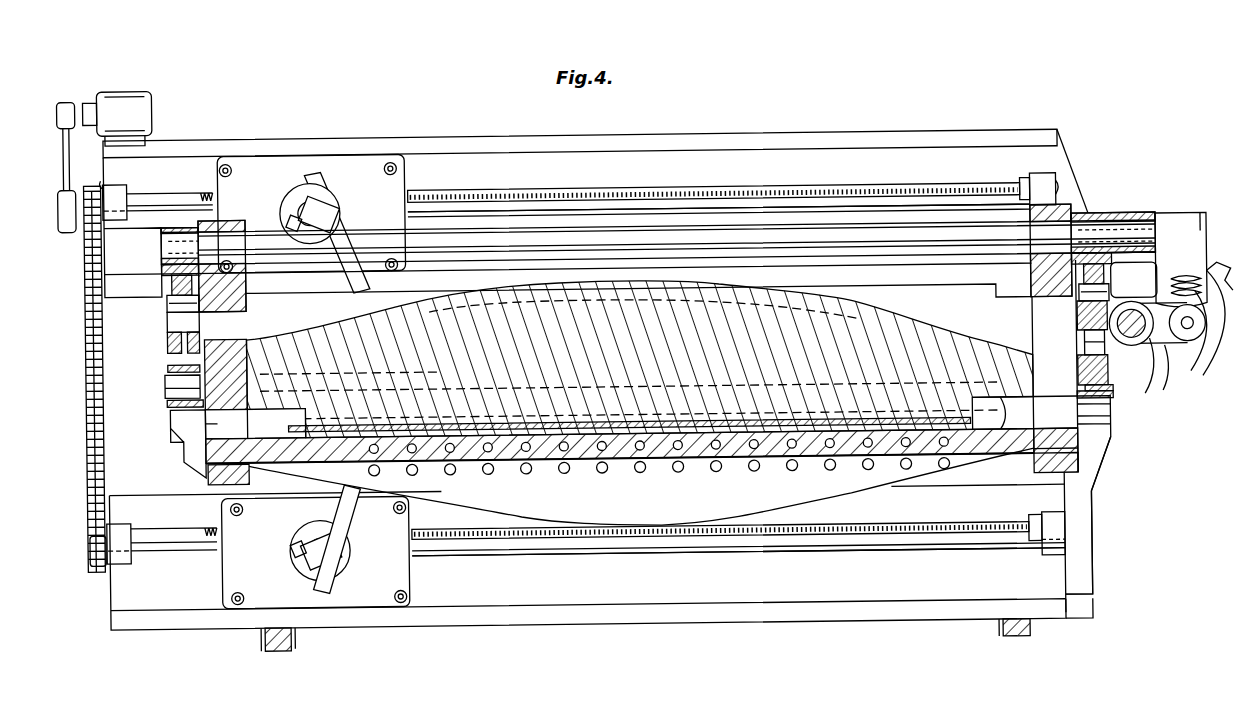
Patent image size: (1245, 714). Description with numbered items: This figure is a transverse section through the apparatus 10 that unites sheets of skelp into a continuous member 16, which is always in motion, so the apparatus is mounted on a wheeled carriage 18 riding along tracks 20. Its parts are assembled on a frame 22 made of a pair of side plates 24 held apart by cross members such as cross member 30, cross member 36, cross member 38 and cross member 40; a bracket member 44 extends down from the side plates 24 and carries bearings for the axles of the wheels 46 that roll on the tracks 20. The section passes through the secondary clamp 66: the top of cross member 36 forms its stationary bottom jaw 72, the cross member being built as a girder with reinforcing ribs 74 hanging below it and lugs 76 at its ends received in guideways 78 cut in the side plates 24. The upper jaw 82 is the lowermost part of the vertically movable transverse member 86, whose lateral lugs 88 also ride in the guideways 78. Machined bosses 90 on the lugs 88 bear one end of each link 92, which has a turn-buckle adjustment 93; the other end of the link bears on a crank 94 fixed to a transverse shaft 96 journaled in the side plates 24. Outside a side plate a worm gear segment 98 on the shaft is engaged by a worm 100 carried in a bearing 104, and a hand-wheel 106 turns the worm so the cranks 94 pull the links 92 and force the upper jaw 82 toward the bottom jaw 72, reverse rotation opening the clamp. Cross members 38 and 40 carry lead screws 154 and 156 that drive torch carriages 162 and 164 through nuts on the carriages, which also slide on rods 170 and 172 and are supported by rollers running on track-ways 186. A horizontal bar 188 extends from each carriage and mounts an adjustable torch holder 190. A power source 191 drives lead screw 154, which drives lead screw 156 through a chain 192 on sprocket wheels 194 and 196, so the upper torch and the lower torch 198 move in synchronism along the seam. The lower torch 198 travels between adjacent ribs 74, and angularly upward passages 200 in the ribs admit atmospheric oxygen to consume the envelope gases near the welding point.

The apparatus 10 is at (820, 126).
The continuous member 16 is at (1018, 412).
The wheeled carriage 18 is at (1100, 607).
The tracks 20 is at (262, 648).
The frame 22 is at (1093, 478).
The side plates 24 is at (240, 209).
The cross member 30 is at (878, 310).
The cross member 36 is at (834, 512).
The cross member 38 is at (736, 142).
The cross member 40 is at (708, 628).
The bracket member 44 is at (166, 460).
The wheels 46 is at (296, 644).
The secondary clamp 66 is at (932, 480).
The stationary bottom jaw 72 is at (992, 440).
The reinforcing ribs 74 is at (449, 504).
The lugs 76 is at (210, 478).
The guideways 78 is at (176, 419).
The upper jaw 82 is at (955, 400).
The transverse member 86 is at (352, 400).
The lugs 88 is at (225, 345).
The machined bosses 90 is at (162, 384).
The link 92 is at (164, 365).
The turn-buckle adjustment 93 is at (162, 338).
The crank 94 is at (163, 260).
The shaft 96 is at (891, 262).
The worm gear segment 98 is at (1139, 259).
The worm 100 is at (1180, 354).
The bearing 104 is at (1181, 364).
The hand-wheel 106 is at (1160, 421).
The lead screw 154 is at (190, 195).
The lead screw 156 is at (197, 532).
The torch carriage 162 is at (345, 211).
The torch carriage 164 is at (288, 560).
The rod 170 is at (659, 208).
The rod 172 is at (625, 568).
The track-ways 186 is at (514, 273).
The horizontal bar 188 is at (293, 190).
The torch holder 190 is at (339, 197).
The power source 191 is at (136, 96).
The chain 192 is at (86, 428).
The sprocket wheel 194 is at (107, 176).
The sprocket wheel 196 is at (96, 571).
The lower torch 198 is at (360, 525).
The passages 200 is at (632, 472).